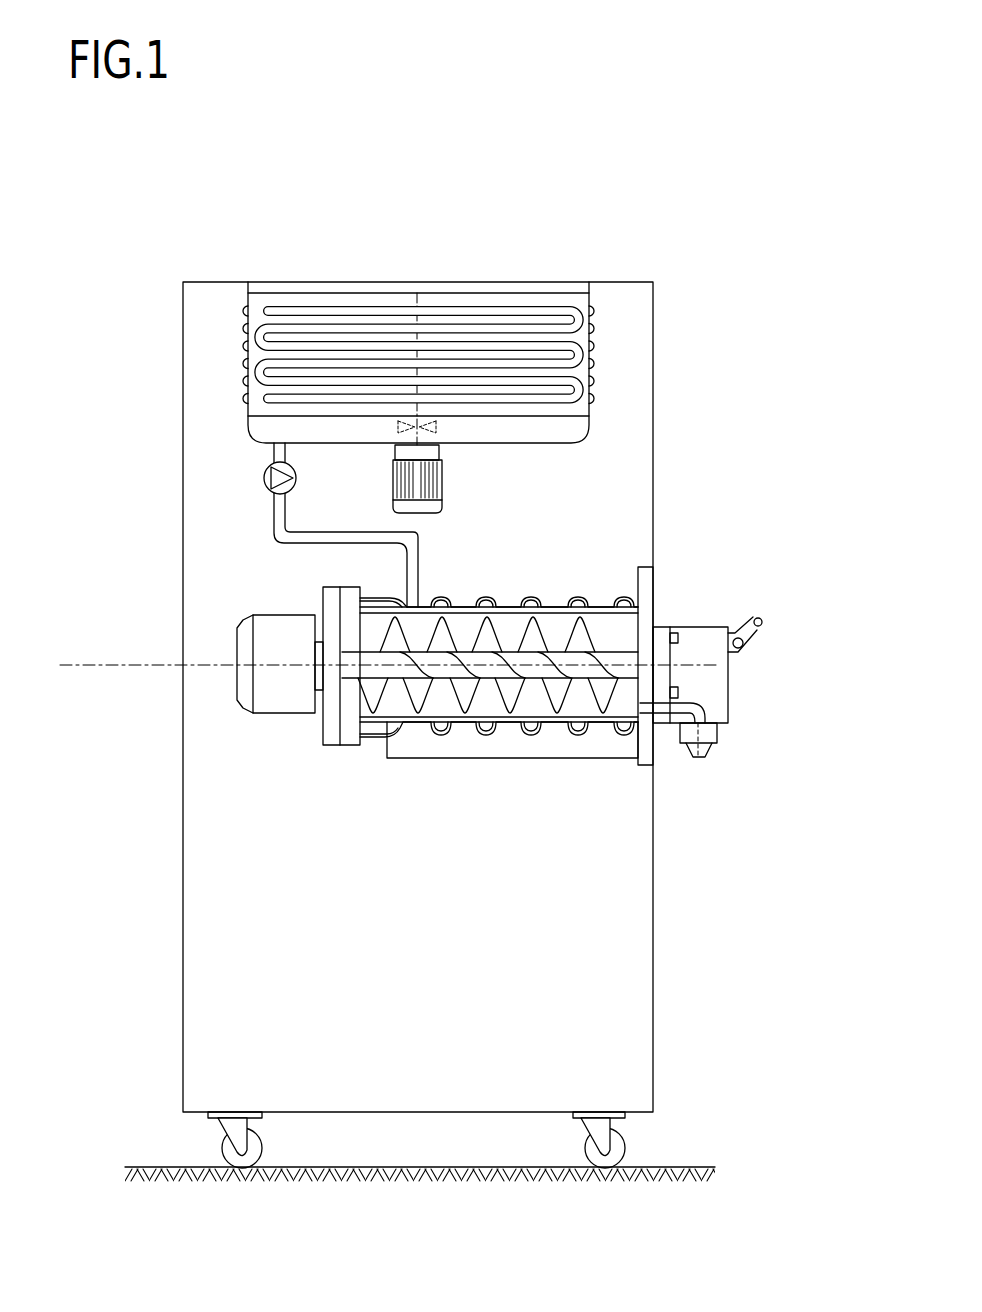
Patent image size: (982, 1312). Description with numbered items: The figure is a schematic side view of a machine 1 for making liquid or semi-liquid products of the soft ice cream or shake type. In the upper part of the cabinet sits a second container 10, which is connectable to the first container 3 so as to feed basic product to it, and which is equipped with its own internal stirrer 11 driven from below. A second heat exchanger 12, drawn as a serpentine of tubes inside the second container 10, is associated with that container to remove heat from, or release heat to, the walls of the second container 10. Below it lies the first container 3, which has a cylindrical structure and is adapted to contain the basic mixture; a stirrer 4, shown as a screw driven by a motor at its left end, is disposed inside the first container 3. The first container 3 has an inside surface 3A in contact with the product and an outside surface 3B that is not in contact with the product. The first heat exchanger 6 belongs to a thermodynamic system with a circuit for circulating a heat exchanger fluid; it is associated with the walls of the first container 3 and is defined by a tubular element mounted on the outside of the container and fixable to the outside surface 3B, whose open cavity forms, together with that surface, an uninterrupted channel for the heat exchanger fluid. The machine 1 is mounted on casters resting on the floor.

The machine 1 is at (632, 208).
The second container 10 is at (483, 274).
The second heat exchanger 12 is at (337, 293).
The internal stirrer 11 is at (443, 428).
The first container 3 is at (648, 620).
The inside surface 3A is at (623, 625).
The outside surface 3B is at (268, 428).
The stirrer 4 is at (455, 690).
The first heat exchanger 6 is at (484, 737).